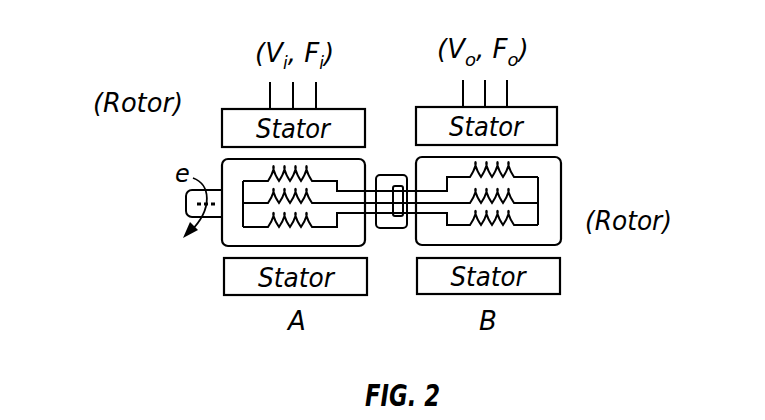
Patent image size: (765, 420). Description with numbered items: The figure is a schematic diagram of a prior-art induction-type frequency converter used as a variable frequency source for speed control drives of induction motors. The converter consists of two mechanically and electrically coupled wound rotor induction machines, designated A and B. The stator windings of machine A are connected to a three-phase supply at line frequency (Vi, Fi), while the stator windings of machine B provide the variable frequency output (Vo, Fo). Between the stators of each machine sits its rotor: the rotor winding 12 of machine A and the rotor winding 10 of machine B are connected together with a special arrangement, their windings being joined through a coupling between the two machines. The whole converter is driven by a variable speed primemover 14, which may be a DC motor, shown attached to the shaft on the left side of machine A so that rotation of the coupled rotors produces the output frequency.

The rotor winding 10 is at (542, 203).
The rotor winding 12 is at (243, 181).
The variable speed primemover 14 is at (187, 206).